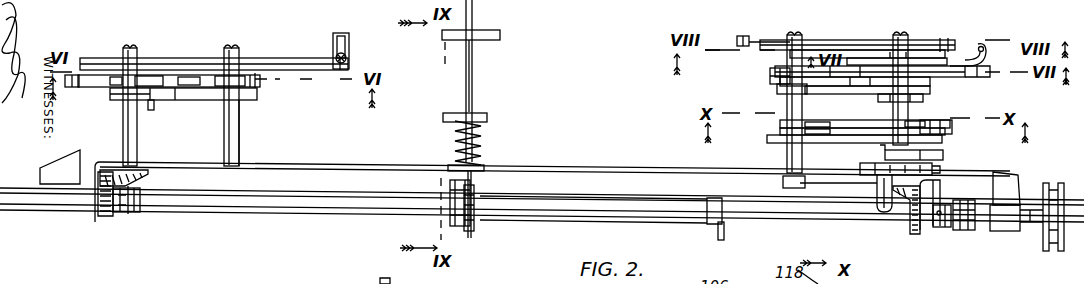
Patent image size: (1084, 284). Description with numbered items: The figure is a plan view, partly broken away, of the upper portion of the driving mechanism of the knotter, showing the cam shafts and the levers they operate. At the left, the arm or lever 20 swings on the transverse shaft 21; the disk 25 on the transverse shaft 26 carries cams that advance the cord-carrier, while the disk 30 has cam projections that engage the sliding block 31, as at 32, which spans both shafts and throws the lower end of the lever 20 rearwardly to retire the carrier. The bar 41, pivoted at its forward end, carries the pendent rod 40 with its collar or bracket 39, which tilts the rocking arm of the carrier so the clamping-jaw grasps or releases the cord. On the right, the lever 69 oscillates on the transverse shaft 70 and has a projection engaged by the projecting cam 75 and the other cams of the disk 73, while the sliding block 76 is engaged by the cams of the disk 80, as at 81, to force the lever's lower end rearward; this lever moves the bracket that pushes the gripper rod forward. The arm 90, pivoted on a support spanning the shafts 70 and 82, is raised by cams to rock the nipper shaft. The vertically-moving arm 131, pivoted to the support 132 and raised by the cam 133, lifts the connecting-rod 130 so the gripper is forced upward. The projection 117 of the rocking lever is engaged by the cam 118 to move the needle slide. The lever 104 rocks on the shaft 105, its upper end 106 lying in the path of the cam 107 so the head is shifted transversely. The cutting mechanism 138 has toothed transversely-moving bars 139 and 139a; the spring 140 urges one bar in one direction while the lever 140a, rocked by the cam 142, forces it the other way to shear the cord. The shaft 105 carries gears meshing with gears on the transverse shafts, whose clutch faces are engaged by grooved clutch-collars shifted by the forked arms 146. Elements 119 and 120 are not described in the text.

The arm or lever 20 is at (262, 86).
The transverse shaft 21 is at (240, 128).
The disk 25 is at (72, 92).
The transverse shaft 26 is at (124, 125).
The disk 30 is at (117, 97).
The sliding block 31 is at (210, 97).
The point of engagement 32 is at (151, 110).
The collar or bracket 39 is at (350, 38).
The pendent rod 40 is at (336, 58).
The bar 41 is at (278, 62).
The lever 69 is at (777, 77).
The transverse shaft 70 is at (787, 107).
The disk 73 is at (937, 78).
The projecting cam 75 is at (985, 78).
The sliding block 76 is at (778, 86).
The disk 80 is at (915, 92).
The point of engagement 81 is at (883, 92).
The transverse shaft 82 is at (952, 124).
The arm 90 is at (968, 60).
The lever 104 is at (727, 234).
The shaft 105 is at (670, 217).
The upper end of lever 106 is at (877, 193).
The cam 107 is at (918, 170).
The projection 117 is at (787, 125).
The cam 118 is at (884, 127).
The plate 119 is at (780, 138).
The plate 120 is at (943, 156).
The connecting-rod 130 is at (740, 46).
The vertically-moving arm 131 is at (812, 38).
The support 132 is at (846, 50).
The cam 133 is at (906, 37).
The cutting mechanism 138 is at (489, 128).
The transversely-moving bar 139 is at (465, 80).
The transversely-moving bar 139a is at (473, 90).
The spring 140 is at (480, 150).
The lever 140a is at (472, 237).
The cam 142 is at (446, 222).
The arms 146 is at (965, 200).